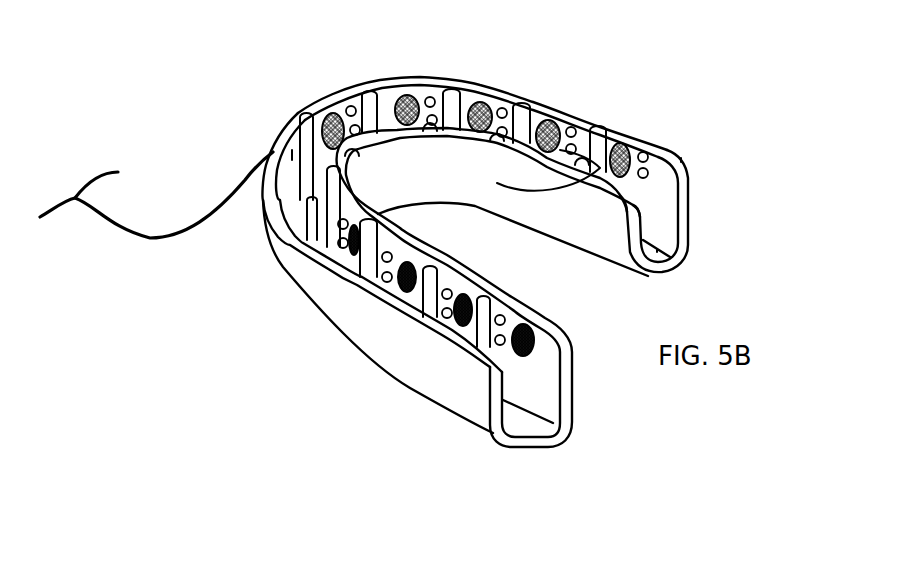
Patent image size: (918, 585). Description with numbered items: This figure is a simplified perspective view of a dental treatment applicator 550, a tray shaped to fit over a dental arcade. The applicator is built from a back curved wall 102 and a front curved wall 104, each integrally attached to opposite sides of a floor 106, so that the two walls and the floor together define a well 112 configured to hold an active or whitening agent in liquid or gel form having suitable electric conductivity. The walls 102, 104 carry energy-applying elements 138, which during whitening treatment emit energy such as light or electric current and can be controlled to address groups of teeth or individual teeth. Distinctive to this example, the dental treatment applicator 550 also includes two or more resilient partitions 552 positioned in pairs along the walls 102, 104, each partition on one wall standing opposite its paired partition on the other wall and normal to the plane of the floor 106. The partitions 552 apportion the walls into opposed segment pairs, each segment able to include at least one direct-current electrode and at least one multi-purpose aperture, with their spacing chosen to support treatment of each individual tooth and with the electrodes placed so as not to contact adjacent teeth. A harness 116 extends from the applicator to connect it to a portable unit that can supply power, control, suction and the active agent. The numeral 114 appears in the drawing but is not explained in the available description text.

The dental treatment applicator 550 is at (320, 40).
The energy-applying elements 138 is at (368, 134).
The well 112 is at (442, 92).
The front curved wall 104 is at (292, 160).
The arm end 114 is at (683, 160).
The resilient partitions 552 is at (371, 126).
The back curved wall 102 is at (398, 258).
The floor 106 is at (657, 250).
The harness 116 is at (213, 228).